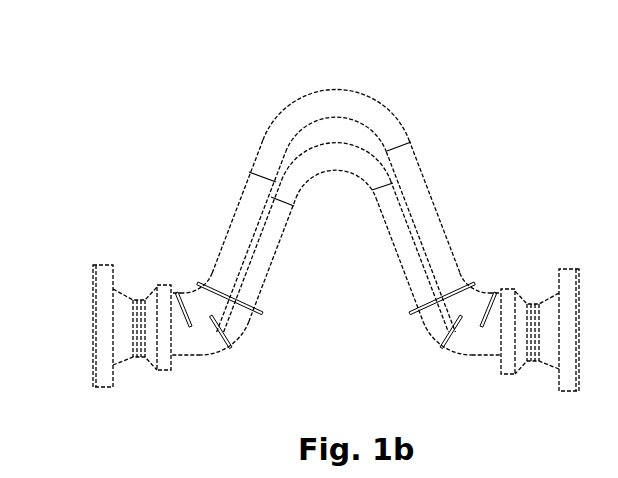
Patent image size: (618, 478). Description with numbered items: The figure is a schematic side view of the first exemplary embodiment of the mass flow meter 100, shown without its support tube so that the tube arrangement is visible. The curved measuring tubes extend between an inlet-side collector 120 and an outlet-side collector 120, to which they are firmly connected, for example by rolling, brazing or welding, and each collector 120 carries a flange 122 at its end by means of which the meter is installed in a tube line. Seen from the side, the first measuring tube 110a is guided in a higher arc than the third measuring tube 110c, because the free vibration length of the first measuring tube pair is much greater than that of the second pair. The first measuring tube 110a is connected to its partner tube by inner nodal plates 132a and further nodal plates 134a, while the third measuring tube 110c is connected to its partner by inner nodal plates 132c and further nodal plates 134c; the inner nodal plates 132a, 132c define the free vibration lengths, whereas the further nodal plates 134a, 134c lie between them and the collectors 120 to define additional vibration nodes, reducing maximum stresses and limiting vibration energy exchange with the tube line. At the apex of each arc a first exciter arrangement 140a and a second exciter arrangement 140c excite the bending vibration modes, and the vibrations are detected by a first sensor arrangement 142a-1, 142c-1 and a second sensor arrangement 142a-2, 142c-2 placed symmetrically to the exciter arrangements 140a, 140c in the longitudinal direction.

The mass flow meter 100 is at (415, 108).
The first measuring tube 110a is at (305, 100).
The third measuring tube 110c is at (300, 167).
The first exciter arrangement 140a is at (335, 116).
The second exciter arrangement 140c is at (336, 172).
The first sensor arrangement 142a-1 is at (290, 186).
The second sensor arrangement 142a-2 is at (403, 190).
The first sensor arrangement 142c-1 is at (296, 214).
The second sensor arrangement 142c-2 is at (383, 213).
The inner nodal plate 132a is at (200, 283).
The inner nodal plate 132c is at (266, 311).
The further nodal plate 134a is at (208, 350).
The further nodal plate 134c is at (234, 347).
The collector 120 is at (172, 366).
The flange 122 is at (106, 372).